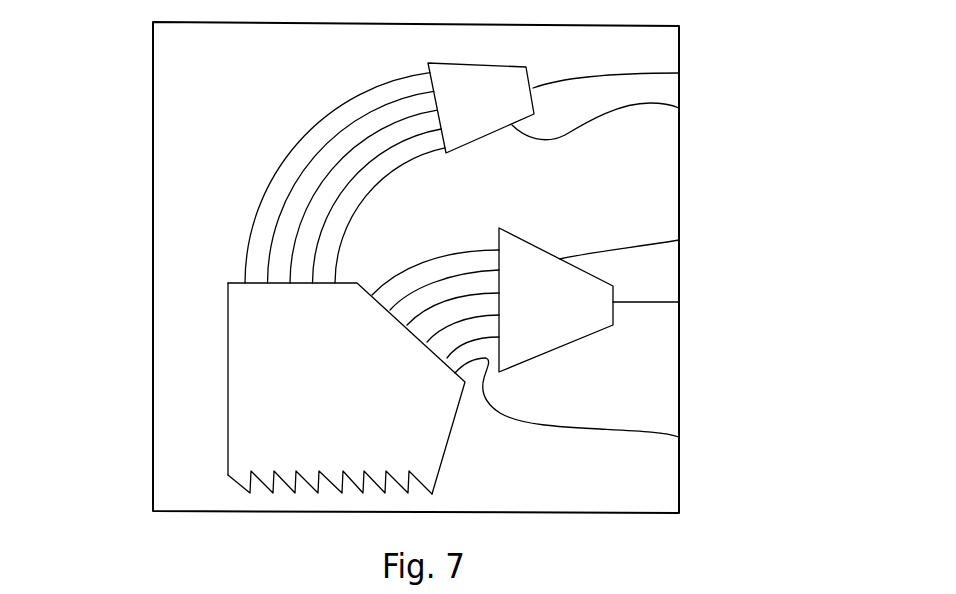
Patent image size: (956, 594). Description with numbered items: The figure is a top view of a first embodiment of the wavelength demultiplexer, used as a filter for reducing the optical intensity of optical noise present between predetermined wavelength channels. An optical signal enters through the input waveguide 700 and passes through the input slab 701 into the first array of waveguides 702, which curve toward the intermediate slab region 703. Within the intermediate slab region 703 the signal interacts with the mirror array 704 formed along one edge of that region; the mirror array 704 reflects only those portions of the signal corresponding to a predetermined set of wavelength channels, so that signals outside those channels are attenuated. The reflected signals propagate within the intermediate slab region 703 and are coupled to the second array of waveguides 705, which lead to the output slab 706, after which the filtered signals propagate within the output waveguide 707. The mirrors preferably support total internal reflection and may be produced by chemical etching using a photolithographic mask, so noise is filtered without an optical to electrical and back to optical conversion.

The input waveguide 700 is at (655, 73).
The input slab 701 is at (679, 108).
The first array of waveguides 702 is at (247, 250).
The intermediate slab region 703 is at (248, 363).
The mirror array 704 is at (308, 477).
The second array of waveguides 705 is at (679, 437).
The output slab 706 is at (679, 240).
The output waveguide 707 is at (642, 305).